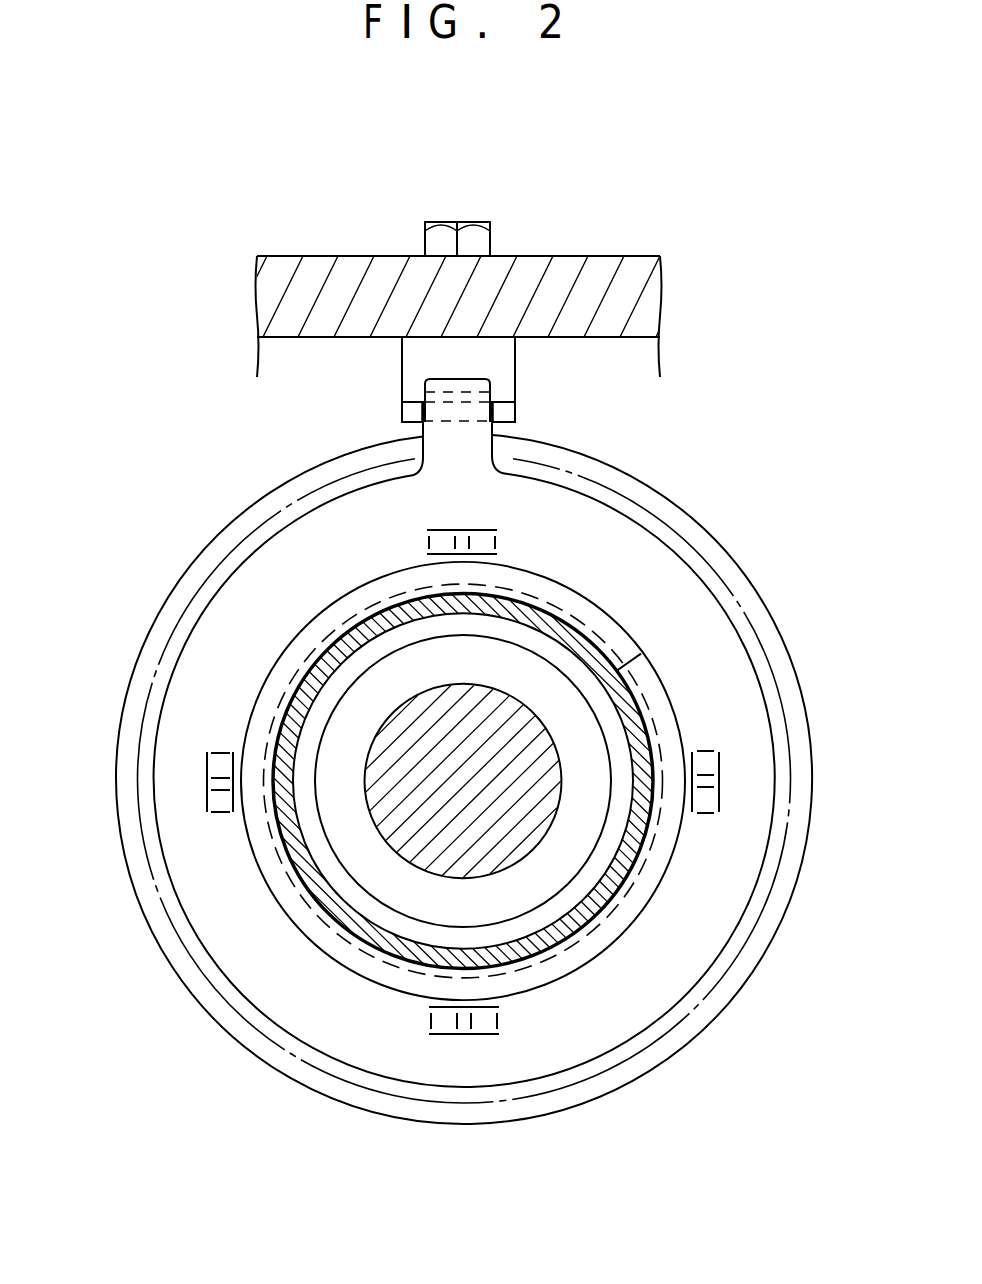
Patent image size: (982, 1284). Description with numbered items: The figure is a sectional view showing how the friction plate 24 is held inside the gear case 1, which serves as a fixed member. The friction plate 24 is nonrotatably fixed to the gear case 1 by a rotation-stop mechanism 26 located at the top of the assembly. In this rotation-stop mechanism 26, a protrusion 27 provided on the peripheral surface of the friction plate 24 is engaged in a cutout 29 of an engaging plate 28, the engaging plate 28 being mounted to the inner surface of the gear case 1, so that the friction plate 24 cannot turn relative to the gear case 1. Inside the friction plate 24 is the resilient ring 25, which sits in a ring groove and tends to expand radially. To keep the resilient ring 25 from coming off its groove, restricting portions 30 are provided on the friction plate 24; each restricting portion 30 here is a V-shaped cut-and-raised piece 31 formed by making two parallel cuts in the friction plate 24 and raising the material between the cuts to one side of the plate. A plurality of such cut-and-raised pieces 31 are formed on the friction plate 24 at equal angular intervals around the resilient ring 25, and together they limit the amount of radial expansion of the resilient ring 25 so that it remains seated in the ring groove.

The gear case 1 is at (287, 256).
The friction plate 24 is at (210, 651).
The resilient ring 25 is at (338, 610).
The rotation-stop mechanism 26 is at (392, 390).
The protrusion 27 is at (483, 430).
The engaging plate 28 is at (500, 357).
The cutout 29 is at (430, 412).
The restricting portion 30 is at (726, 759).
The cut-and-raised piece 31 is at (713, 780).